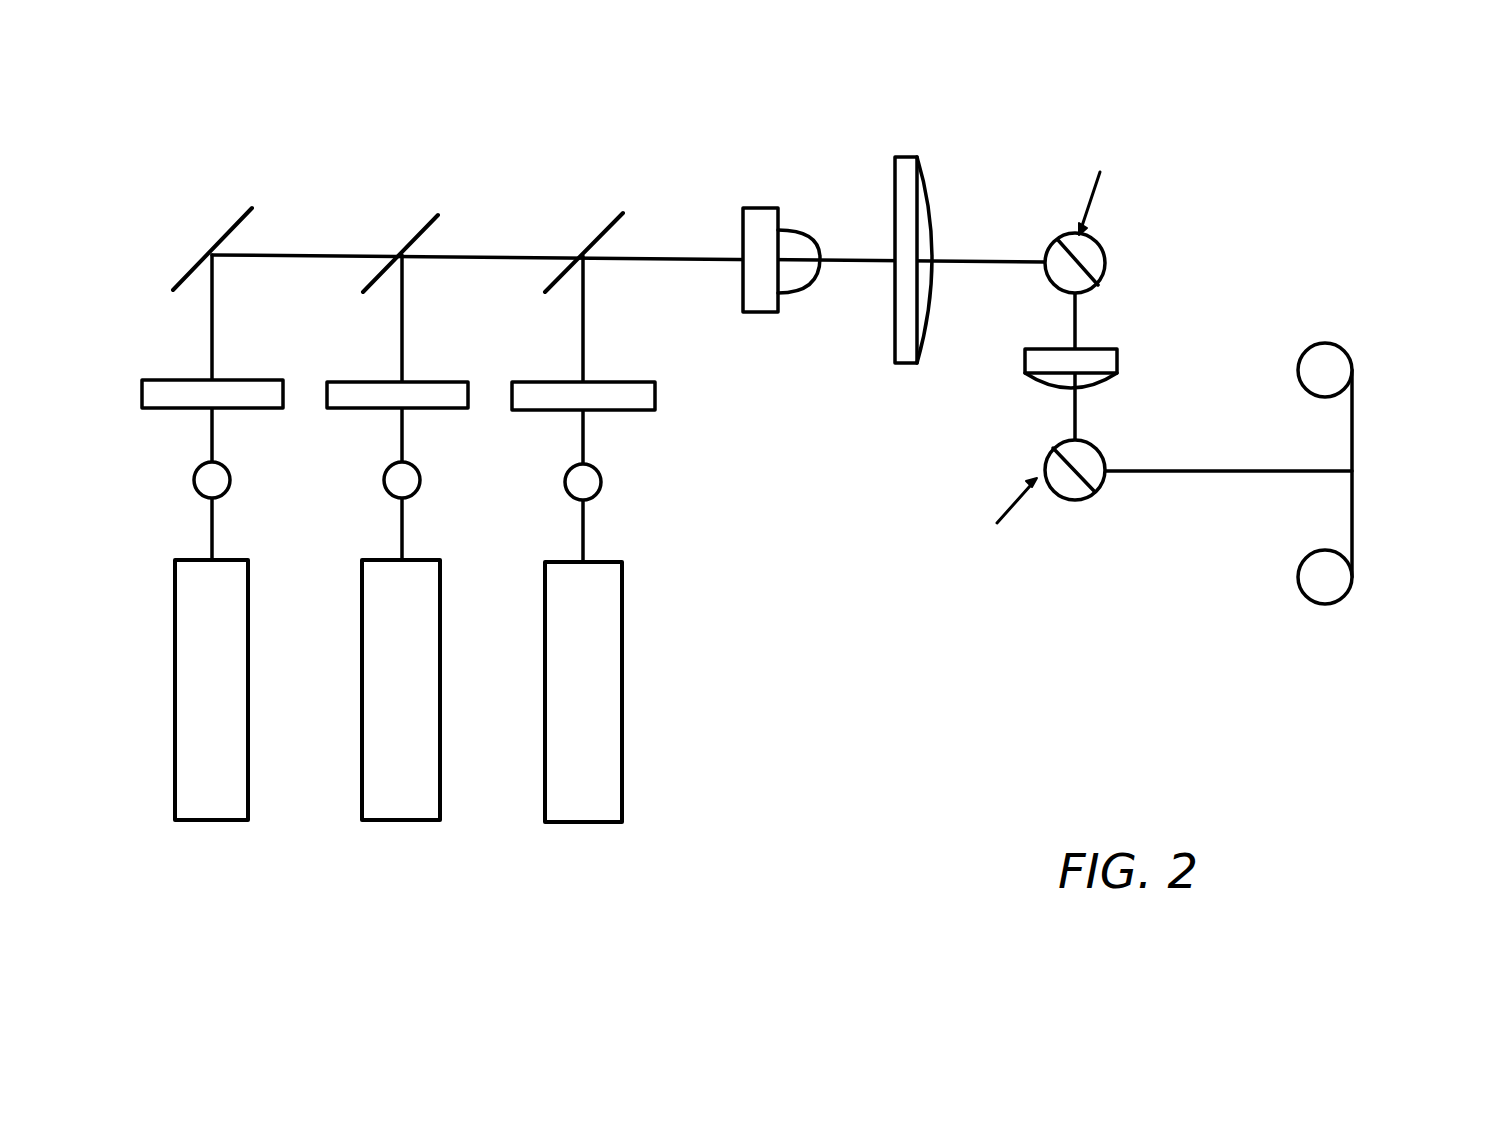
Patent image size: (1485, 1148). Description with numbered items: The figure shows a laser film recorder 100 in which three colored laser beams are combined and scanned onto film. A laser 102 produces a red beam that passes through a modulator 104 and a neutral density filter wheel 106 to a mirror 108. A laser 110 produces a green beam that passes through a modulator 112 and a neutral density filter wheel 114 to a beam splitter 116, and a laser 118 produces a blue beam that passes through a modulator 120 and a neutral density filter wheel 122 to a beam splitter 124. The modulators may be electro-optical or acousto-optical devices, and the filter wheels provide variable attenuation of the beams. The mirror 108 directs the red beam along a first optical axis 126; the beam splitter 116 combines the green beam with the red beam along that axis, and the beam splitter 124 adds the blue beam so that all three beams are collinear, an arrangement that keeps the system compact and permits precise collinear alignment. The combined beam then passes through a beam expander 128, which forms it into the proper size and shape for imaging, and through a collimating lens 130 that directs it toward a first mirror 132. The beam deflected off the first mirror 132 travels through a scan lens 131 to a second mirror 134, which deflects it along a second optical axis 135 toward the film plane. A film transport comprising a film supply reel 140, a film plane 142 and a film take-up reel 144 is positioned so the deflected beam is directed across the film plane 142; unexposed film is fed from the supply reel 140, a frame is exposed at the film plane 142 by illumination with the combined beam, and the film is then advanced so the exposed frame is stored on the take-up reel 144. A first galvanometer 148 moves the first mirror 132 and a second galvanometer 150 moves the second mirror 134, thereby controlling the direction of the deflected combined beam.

The laser film recorder 100 is at (790, 768).
The laser 102 is at (233, 808).
The modulator 104 is at (227, 492).
The neutral density filter wheel 106 is at (262, 392).
The mirror 108 is at (247, 208).
The laser 110 is at (422, 808).
The modulator 112 is at (417, 492).
The neutral density filter wheel 114 is at (451, 393).
The beam splitter 116 is at (428, 214).
The laser 118 is at (610, 812).
The modulator 120 is at (599, 490).
The neutral density filter wheel 122 is at (645, 392).
The beam splitter 124 is at (612, 210).
The first optical axis 126 is at (675, 258).
The beam expander 128 is at (767, 218).
The collimating lens 130 is at (930, 212).
The scan lens 131 is at (1117, 360).
The first mirror 132 is at (1097, 268).
The second mirror 134 is at (1078, 500).
The second optical axis 135 is at (1232, 471).
The film supply reel 140 is at (1305, 597).
The film plane 142 is at (1352, 443).
The film take-up reel 144 is at (1340, 343).
The first galvanometer 148 is at (1124, 195).
The second galvanometer 150 is at (986, 513).